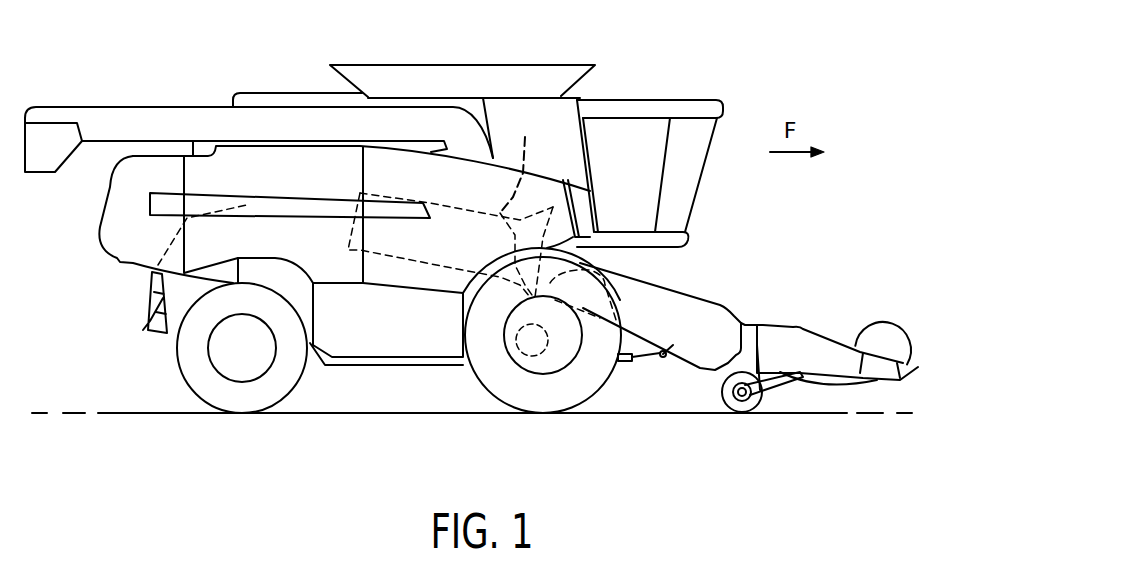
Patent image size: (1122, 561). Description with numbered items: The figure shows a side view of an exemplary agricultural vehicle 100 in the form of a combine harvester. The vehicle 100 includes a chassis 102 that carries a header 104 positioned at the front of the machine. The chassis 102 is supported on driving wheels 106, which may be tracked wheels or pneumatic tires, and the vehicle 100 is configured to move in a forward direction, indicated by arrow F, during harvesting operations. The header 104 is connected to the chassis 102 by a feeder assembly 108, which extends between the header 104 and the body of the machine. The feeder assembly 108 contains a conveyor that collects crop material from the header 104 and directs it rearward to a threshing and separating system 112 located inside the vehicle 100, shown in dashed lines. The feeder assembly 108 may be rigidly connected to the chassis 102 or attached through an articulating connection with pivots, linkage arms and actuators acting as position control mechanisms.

The agricultural vehicle 100 is at (719, 39).
The chassis 102 is at (383, 334).
The header 104 is at (824, 318).
The driving wheels 106 is at (242, 393).
The feeder assembly 108 is at (688, 308).
The threshing and separating system 112 is at (524, 161).